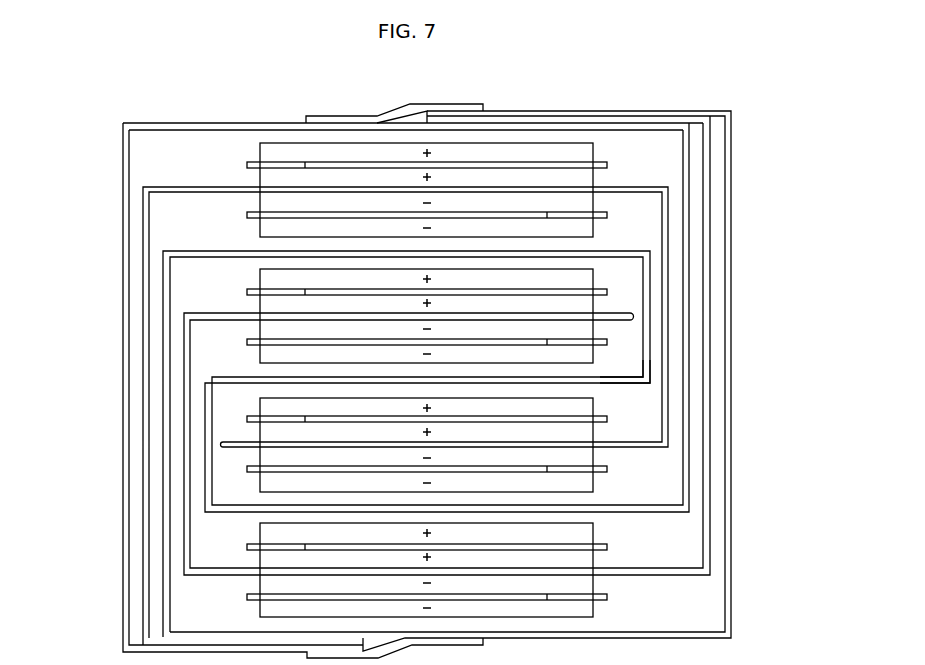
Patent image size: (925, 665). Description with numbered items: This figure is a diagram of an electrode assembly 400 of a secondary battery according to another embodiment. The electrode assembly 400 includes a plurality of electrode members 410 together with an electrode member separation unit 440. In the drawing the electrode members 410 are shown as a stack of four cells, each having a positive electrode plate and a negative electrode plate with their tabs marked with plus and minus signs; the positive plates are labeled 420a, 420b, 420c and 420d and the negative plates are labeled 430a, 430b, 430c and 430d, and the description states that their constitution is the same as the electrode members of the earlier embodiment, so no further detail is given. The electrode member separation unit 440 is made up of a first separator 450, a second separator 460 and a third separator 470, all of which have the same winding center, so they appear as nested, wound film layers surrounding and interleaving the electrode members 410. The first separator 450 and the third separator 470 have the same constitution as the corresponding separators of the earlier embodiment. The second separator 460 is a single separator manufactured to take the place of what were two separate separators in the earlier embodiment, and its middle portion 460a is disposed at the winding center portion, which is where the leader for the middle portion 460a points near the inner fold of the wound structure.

The electrode assembly 400 is at (84, 74).
The electrode members 410 is at (62, 158).
The first positive electrode plate 420a is at (236, 165).
The second positive electrode plate 420b is at (236, 292).
The third positive electrode plate 420c is at (236, 419).
The fourth positive electrode plate 420d is at (236, 547).
The first negative electrode plate 430a is at (236, 215).
The second negative electrode plate 430b is at (236, 342).
The third negative electrode plate 430c is at (236, 469).
The fourth negative electrode plate 430d is at (236, 597).
The electrode member separation unit 440 is at (727, 199).
The first separator 450 is at (627, 316).
The second separator 460 is at (636, 378).
The middle portion of the second separator 460a is at (623, 384).
The third separator 470 is at (623, 448).